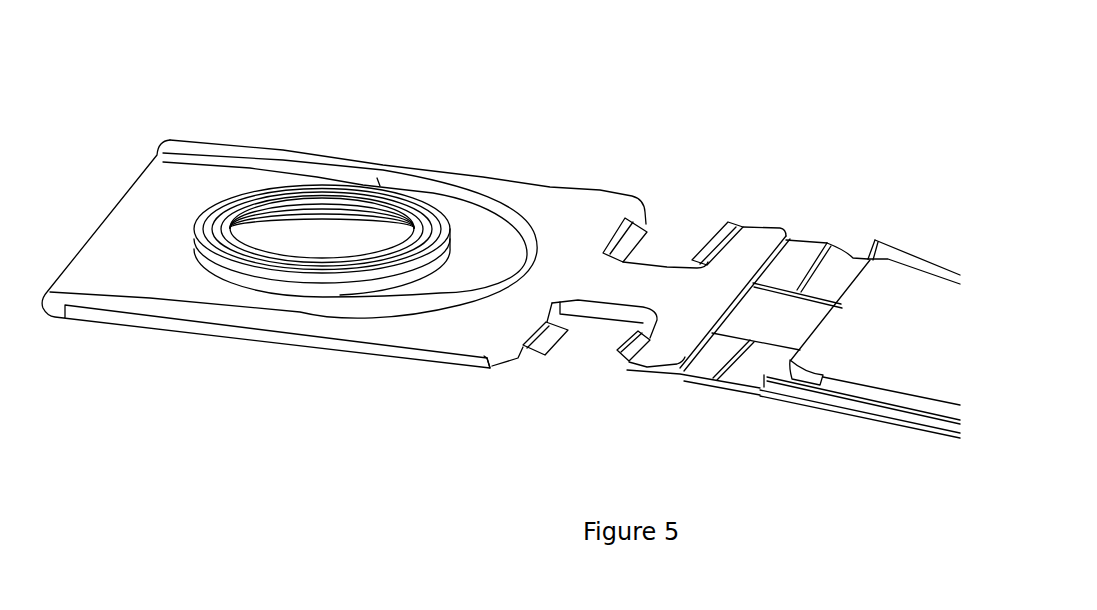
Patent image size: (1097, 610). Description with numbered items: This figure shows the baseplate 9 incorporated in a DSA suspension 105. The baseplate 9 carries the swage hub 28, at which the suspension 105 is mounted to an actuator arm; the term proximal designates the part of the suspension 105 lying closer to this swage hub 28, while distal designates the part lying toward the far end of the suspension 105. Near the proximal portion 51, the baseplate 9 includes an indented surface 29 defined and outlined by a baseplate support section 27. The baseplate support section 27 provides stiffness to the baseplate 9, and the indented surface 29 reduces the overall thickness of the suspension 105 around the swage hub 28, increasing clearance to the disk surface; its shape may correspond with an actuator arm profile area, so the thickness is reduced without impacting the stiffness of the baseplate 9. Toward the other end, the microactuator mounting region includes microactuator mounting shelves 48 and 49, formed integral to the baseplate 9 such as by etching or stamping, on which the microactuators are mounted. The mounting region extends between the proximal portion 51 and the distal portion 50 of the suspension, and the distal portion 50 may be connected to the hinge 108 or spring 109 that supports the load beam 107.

The baseplate 9 is at (240, 120).
The baseplate support section 27 is at (150, 297).
The swage hub 28 is at (363, 185).
The indented surface 29 is at (127, 263).
The microactuator mounting shelf 48 is at (628, 234).
The microactuator mounting shelf 49 is at (713, 238).
The distal portion 50 is at (773, 227).
The proximal portion 51 is at (480, 362).
The DSA suspension 105 is at (555, 158).
The load beam 107 is at (937, 255).
The hinge 108 is at (840, 257).
The spring 109 is at (672, 385).